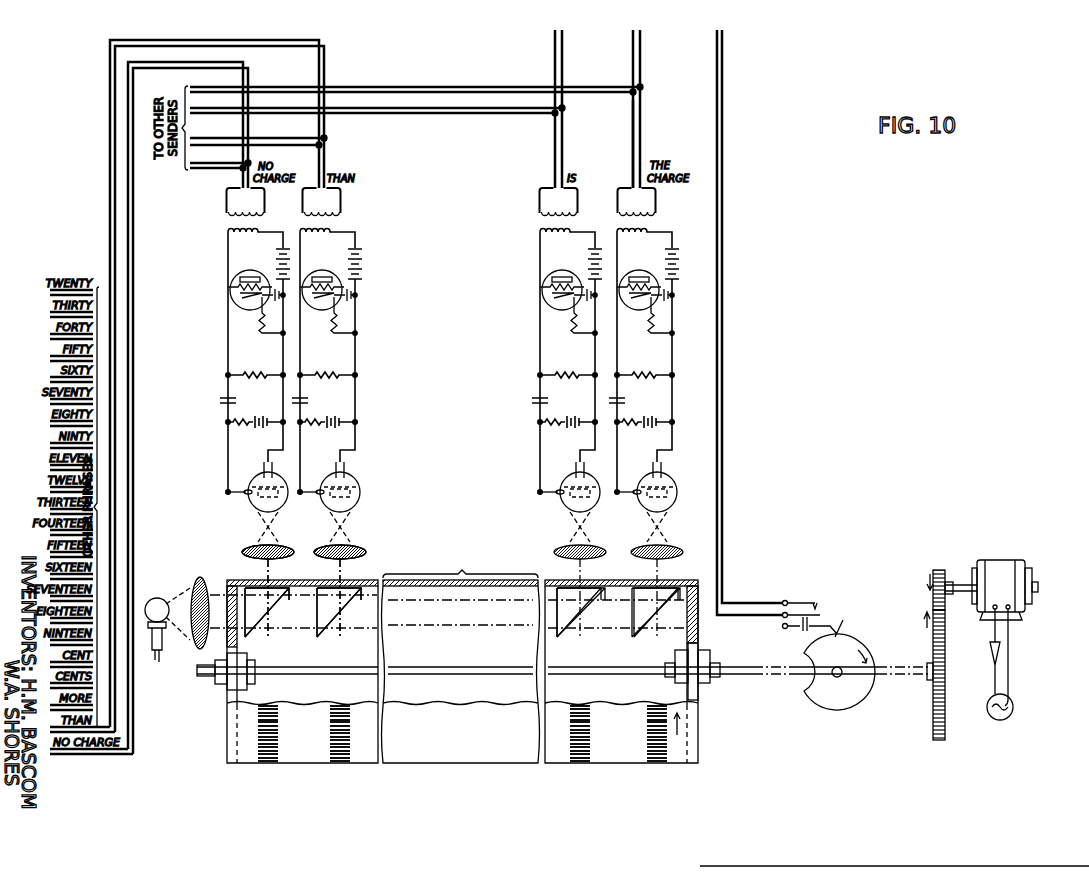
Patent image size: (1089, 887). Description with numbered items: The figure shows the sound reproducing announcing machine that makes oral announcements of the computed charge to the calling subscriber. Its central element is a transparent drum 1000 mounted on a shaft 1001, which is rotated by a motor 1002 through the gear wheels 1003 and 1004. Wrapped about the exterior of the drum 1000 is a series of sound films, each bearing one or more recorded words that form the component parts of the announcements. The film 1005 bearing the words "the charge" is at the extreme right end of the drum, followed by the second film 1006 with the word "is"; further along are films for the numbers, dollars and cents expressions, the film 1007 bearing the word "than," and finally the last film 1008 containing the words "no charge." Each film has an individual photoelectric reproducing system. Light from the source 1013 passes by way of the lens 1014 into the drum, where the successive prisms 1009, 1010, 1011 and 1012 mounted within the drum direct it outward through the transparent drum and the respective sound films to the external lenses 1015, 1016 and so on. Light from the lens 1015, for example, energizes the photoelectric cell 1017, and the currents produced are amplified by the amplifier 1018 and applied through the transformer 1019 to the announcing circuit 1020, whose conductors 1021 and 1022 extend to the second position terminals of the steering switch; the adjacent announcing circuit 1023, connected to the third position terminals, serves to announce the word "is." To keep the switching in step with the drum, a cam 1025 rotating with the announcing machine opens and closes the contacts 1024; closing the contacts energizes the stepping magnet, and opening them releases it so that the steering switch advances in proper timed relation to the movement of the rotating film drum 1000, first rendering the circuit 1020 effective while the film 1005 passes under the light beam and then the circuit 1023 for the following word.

The transparent drum 1000 is at (700, 762).
The shaft 1001 is at (737, 680).
The motor 1002 is at (1000, 560).
The gear wheel 1003 is at (940, 570).
The gear wheel 1004 is at (933, 718).
The film 1005 is at (650, 750).
The second film 1006 is at (575, 750).
The film 1007 is at (338, 750).
The last film 1008 is at (262, 750).
The prism 1009 is at (638, 620).
The prism 1010 is at (571, 620).
The prism 1011 is at (330, 620).
The prism 1012 is at (268, 620).
The light source 1013 is at (157, 597).
The lens 1014 is at (193, 577).
The external lens 1015 is at (646, 548).
The external lens 1016 is at (561, 548).
The photoelectric cell 1017 is at (690, 472).
The amplifier 1018 is at (660, 306).
The transformer 1019 is at (655, 217).
The announcing circuit 1020 is at (634, 143).
The conductor 1021 is at (632, 50).
The conductor 1022 is at (641, 68).
The announcing circuit 1023 is at (554, 132).
The contacts 1024 is at (800, 600).
The cam 1025 is at (852, 635).